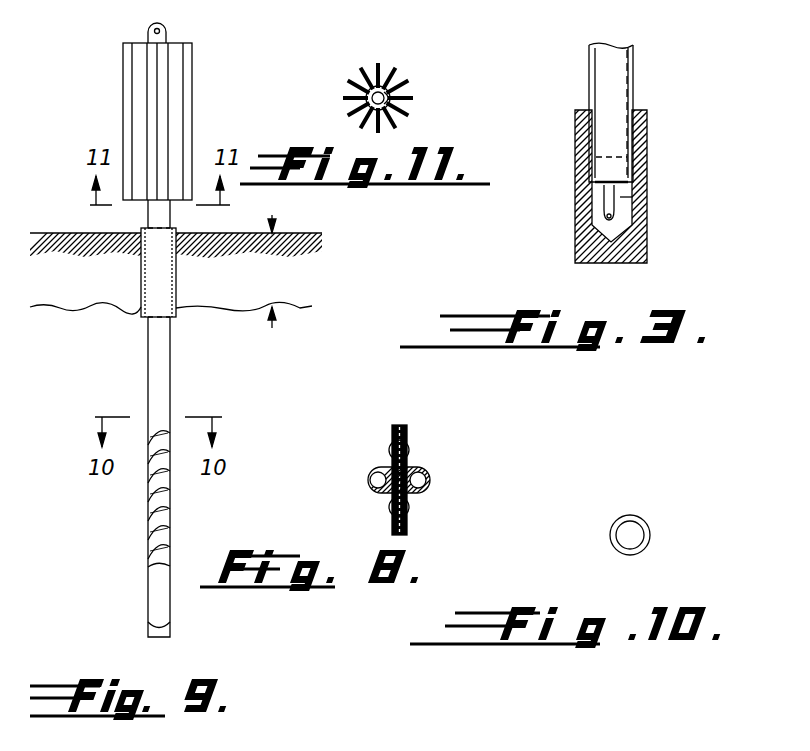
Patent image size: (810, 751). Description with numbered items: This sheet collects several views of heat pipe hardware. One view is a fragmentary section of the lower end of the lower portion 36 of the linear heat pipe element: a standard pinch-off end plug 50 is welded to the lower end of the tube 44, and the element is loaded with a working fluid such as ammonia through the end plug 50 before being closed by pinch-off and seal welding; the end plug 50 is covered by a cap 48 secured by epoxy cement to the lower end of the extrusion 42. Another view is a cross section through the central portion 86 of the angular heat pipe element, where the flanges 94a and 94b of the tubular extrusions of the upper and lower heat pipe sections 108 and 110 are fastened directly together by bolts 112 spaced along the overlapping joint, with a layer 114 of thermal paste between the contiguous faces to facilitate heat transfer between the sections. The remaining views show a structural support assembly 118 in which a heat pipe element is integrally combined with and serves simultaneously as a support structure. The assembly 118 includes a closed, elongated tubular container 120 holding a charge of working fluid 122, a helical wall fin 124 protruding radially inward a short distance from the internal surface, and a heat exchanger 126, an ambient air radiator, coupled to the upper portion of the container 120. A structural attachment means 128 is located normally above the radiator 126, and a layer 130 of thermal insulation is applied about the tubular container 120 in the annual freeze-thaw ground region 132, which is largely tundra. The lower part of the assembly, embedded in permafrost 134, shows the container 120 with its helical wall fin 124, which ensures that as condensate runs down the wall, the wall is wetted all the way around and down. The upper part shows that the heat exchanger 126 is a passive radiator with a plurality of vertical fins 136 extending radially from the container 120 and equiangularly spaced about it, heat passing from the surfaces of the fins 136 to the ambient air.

In FIG. 3, the lower portion 36 is at (680, 98).
In FIG. 3, the extrusion 42 is at (588, 68).
In FIG. 3, the tube 44 is at (634, 62).
In FIG. 3, the cap 48 is at (578, 228).
In FIG. 3, the pinch-off end plug 50 is at (632, 199).
In FIG. 8, the central portion 86 is at (423, 435).
In FIG. 8, the flange 94a is at (392, 518).
In FIG. 8, the flange 94b is at (392, 432).
In FIG. 8, the upper heat pipe section 108 is at (425, 470).
In FIG. 8, the lower heat pipe section 110 is at (372, 474).
In FIG. 8, the bolts 112 is at (409, 512).
In FIG. 8, the layer of thermal paste 114 is at (398, 425).
In FIG. 9, the structural support assembly 118 is at (97, 95).
In FIG. 11, the structural support assembly 118 is at (352, 54).
In FIG. 10, the structural support assembly 118 is at (617, 500).
In FIG. 9, the tubular container 120 is at (146, 348).
In FIG. 11, the tubular container 120 is at (367, 106).
In FIG. 10, the tubular container 120 is at (612, 540).
In FIG. 9, the working fluid 122 is at (148, 620).
In FIG. 9, the helical wall fin 124 is at (148, 505).
In FIG. 11, the helical wall fin 124 is at (394, 90).
In FIG. 10, the helical wall fin 124 is at (640, 524).
In FIG. 9, the heat exchanger 126 is at (192, 96).
In FIG. 11, the heat exchanger 126 is at (380, 64).
In FIG. 9, the structural attachment means 128 is at (168, 28).
In FIG. 9, the layer of thermal insulation 130 is at (178, 278).
In FIG. 9, the annual freeze-thaw ground region 132 is at (262, 336).
In FIG. 9, the permafrost 134 is at (98, 307).
In FIG. 11, the vertical fins 136 is at (393, 106).